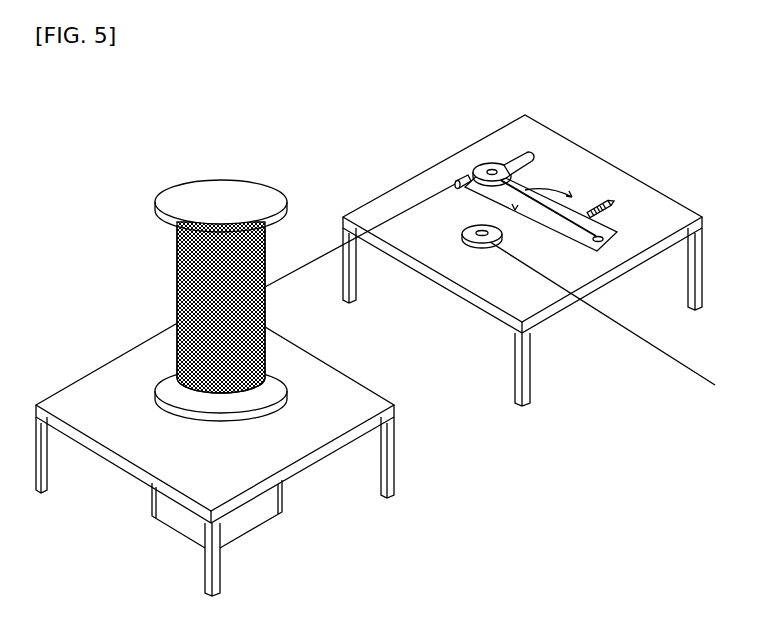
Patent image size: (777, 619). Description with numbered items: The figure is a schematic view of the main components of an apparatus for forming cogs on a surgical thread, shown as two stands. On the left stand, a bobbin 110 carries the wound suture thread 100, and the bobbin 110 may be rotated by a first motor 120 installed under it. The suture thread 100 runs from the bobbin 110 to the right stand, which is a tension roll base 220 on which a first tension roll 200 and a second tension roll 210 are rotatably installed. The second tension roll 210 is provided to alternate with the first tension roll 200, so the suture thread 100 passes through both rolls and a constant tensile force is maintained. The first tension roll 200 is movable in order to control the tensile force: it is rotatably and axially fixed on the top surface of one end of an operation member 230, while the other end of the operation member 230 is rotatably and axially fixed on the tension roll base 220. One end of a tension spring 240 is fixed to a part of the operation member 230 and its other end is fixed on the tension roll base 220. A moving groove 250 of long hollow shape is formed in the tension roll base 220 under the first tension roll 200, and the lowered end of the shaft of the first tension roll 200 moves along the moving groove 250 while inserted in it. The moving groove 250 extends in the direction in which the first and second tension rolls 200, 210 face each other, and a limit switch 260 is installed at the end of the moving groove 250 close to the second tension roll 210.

The suture thread 100 is at (650, 348).
The bobbin 110 is at (215, 192).
The first motor 120 is at (252, 517).
The first tension roll 200 is at (487, 167).
The second tension roll 210 is at (498, 236).
The tension roll base 220 is at (584, 162).
The operation member 230 is at (522, 190).
The tension spring 240 is at (614, 220).
The moving groove 250 is at (522, 160).
The limit switch 260 is at (458, 190).